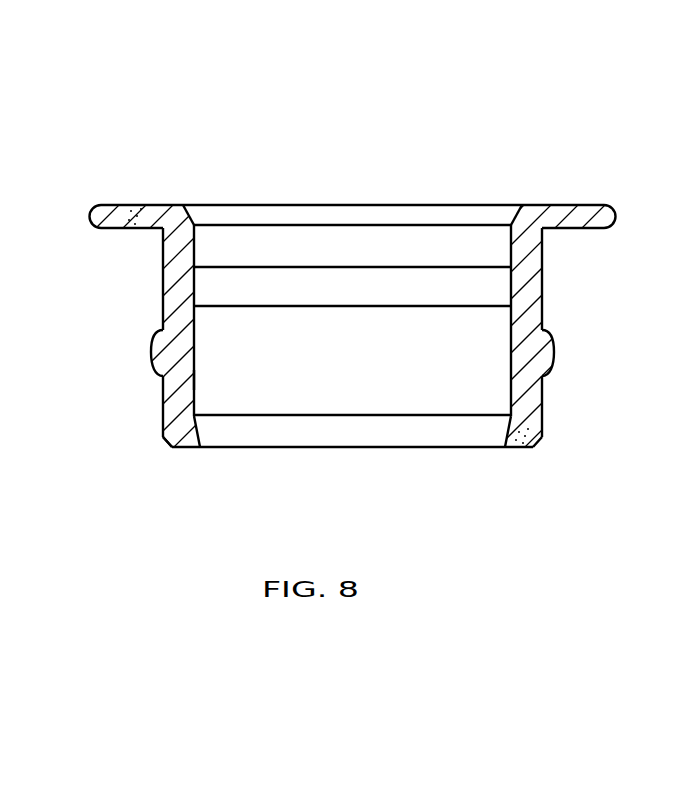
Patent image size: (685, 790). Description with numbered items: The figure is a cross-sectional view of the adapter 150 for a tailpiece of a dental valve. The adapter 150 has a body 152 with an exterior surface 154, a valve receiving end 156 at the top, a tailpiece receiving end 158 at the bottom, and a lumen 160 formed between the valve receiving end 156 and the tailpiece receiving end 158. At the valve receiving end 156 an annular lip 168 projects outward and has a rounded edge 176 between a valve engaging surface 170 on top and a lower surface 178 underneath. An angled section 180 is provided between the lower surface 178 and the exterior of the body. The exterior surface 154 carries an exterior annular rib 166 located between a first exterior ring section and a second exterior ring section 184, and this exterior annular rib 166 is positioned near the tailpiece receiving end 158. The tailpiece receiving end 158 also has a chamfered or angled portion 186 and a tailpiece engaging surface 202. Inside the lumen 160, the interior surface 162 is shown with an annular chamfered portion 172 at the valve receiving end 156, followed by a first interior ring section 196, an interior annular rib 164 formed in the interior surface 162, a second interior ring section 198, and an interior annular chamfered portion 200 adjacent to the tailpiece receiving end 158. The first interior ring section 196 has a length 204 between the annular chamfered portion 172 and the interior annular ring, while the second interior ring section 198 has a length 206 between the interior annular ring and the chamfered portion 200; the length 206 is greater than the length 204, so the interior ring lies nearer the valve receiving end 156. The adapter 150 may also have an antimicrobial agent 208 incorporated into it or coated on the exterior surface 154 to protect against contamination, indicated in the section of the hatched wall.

The adapter 150 is at (305, 114).
The body 152 is at (95, 440).
The exterior surface 154 is at (543, 278).
The valve receiving end 156 is at (437, 144).
The tailpiece receiving end 158 is at (410, 488).
The lumen 160 is at (347, 239).
The interior surface 162 is at (494, 357).
The interior annular rib 164 is at (196, 288).
The exterior annular rib 166 is at (150, 350).
The annular lip 168 is at (575, 161).
The valve engaging surface 170 is at (113, 204).
The annular chamfered portion 172 is at (192, 212).
The rounded edge 176 is at (615, 217).
The lower surface 178 is at (587, 232).
The angled section 180 is at (160, 233).
The second exterior ring section 184 is at (165, 400).
The chamfered or angled portion 186 is at (172, 440).
The first interior ring section 196 is at (196, 242).
The second interior ring section 198 is at (197, 378).
The interior annular chamfered portion 200 is at (200, 432).
The tailpiece engaging surface 202 is at (516, 448).
The length 204 is at (499, 240).
The length 206 is at (218, 340).
The antimicrobial agent 208 is at (136, 213).